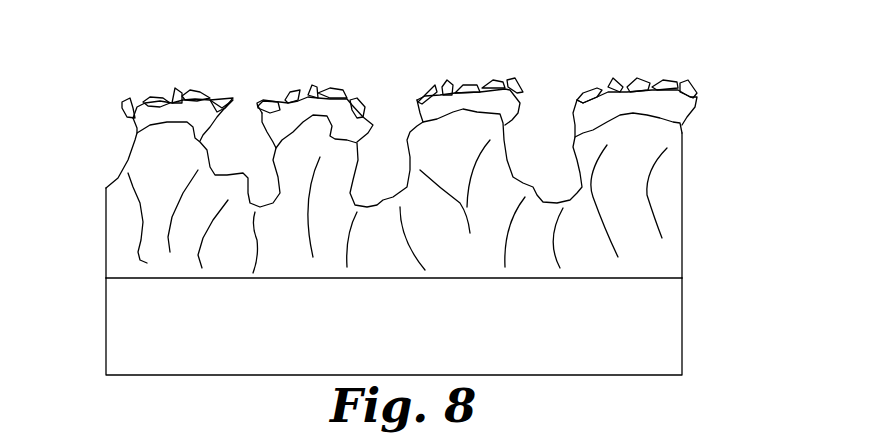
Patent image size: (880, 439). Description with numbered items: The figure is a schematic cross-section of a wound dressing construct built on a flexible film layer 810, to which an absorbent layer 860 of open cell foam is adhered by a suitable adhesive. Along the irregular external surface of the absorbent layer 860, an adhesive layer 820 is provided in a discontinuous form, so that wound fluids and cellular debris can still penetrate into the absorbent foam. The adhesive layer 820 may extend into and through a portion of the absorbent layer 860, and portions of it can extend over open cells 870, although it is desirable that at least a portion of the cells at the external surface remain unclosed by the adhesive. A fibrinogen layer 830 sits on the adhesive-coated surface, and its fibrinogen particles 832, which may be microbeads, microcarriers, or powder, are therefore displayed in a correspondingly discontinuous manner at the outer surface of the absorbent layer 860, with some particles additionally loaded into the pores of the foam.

The film layer 810 is at (116, 330).
The absorbent layer 860 is at (116, 220).
The adhesive layer 820 is at (138, 123).
The open cells 870 is at (385, 145).
The fibrinogen layer 830 is at (703, 80).
The fibrinogen particles 832 is at (667, 82).